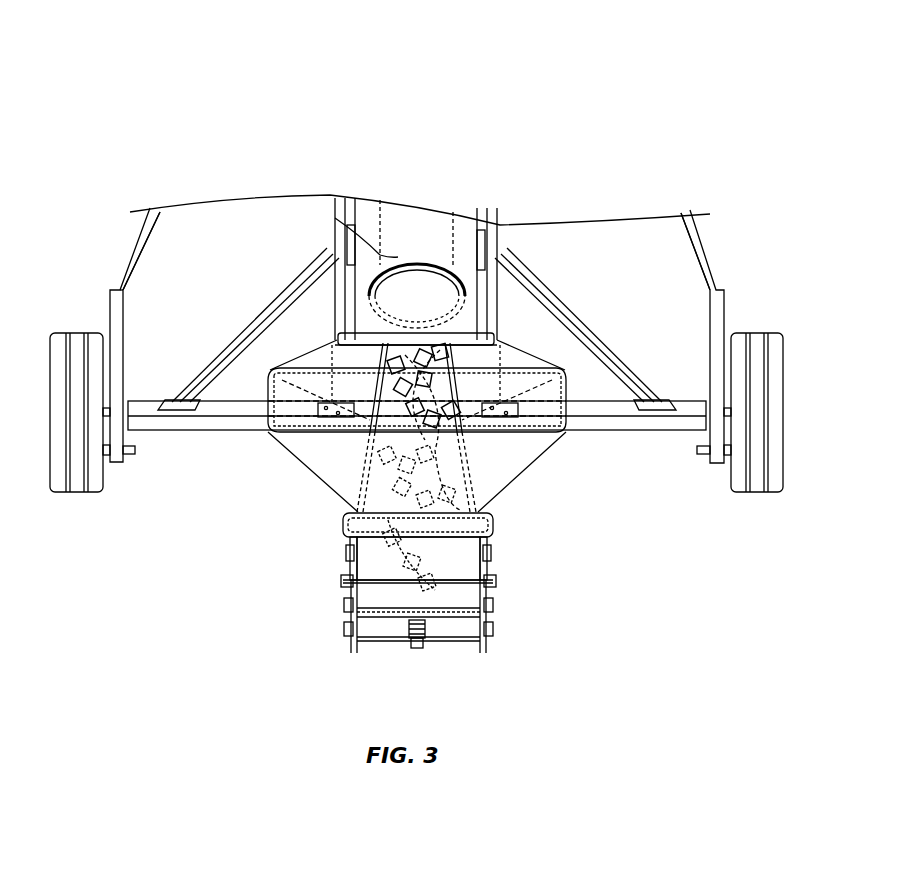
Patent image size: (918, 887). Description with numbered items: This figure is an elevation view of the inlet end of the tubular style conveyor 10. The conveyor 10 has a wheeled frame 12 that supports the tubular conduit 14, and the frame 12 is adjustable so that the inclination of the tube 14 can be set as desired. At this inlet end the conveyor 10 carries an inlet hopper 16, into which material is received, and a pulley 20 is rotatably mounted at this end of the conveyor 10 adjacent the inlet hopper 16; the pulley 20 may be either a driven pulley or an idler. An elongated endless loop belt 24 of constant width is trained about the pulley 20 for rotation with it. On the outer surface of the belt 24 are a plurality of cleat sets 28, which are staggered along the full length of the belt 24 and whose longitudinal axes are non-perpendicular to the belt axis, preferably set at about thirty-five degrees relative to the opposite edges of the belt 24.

The tubular style conveyor 10 is at (182, 40).
The wheeled frame 12 is at (693, 250).
The tubular conduit 14 is at (396, 258).
The inlet hopper 16 is at (304, 446).
The pulley 20 is at (462, 552).
The endless loop belt 24 is at (458, 478).
The cleat sets 28 is at (348, 350).